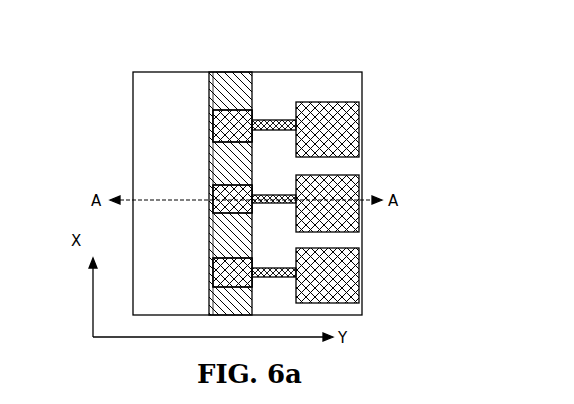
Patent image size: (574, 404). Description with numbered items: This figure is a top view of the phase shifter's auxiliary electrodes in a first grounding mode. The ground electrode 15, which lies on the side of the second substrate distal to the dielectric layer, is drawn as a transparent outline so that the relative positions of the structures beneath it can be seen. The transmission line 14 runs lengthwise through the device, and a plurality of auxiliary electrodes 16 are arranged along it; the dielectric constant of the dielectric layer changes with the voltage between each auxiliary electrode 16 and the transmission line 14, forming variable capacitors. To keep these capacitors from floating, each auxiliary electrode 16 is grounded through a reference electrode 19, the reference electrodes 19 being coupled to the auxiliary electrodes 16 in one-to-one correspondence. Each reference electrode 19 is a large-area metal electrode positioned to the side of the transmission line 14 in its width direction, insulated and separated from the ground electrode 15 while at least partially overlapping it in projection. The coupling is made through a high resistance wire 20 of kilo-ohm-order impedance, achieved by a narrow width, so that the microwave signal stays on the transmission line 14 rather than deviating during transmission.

The transmission line 14 is at (226, 80).
The ground electrode 15 is at (337, 72).
The auxiliary electrode 16 is at (220, 130).
The reference electrode 19 is at (355, 106).
The high resistance wire 20 is at (267, 118).